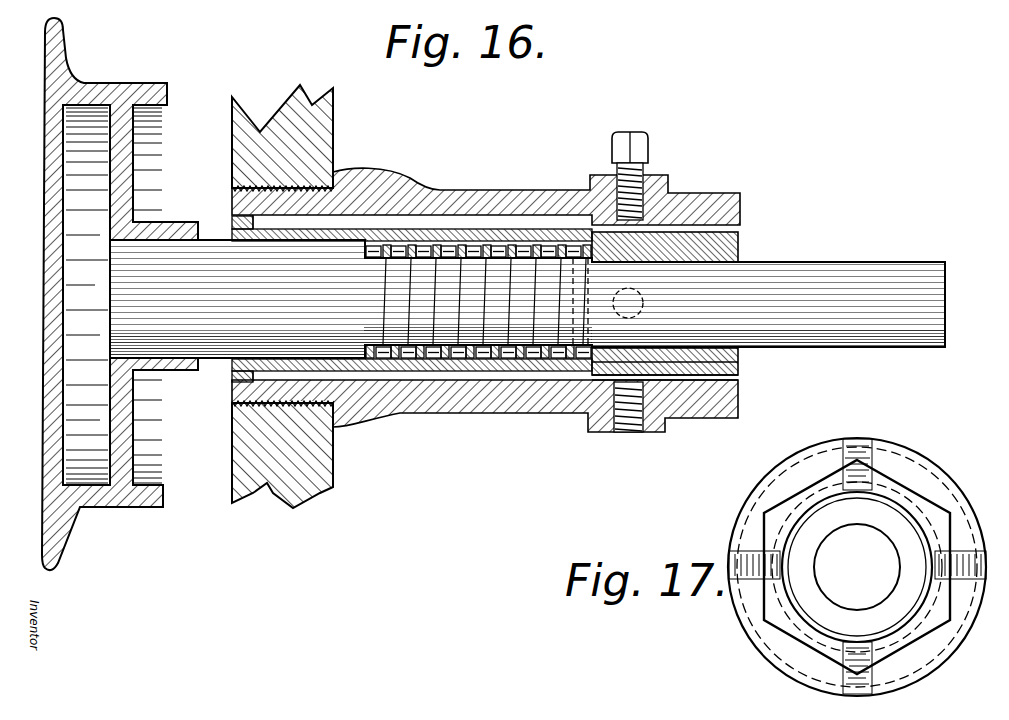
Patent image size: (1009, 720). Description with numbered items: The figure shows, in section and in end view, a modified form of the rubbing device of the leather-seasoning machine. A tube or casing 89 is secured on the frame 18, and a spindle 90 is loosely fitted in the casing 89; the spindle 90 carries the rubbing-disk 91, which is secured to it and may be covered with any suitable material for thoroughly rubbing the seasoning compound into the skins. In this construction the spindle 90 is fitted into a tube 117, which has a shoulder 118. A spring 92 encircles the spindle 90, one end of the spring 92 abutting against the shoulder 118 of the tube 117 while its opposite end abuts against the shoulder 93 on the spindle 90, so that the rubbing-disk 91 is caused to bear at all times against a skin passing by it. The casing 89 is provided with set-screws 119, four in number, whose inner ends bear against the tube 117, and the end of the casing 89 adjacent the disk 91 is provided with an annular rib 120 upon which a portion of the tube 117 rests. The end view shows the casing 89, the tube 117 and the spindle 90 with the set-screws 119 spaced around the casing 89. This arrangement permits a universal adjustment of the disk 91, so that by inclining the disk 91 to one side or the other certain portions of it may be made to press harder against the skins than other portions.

In FIG. 16, the frame 18 is at (278, 125).
In FIG. 16, the casing 89 is at (486, 193).
In FIG. 17, the casing 89 is at (922, 482).
In FIG. 16, the spindle 90 is at (527, 298).
In FIG. 17, the spindle 90 is at (857, 567).
In FIG. 16, the rubbing-disk 91 is at (102, 294).
In FIG. 16, the spring 92 is at (536, 240).
In FIG. 16, the shoulder 93 is at (372, 247).
In FIG. 16, the tube 117 is at (714, 250).
In FIG. 17, the tube 117 is at (820, 523).
In FIG. 16, the shoulder 118 is at (737, 366).
In FIG. 16, the set-screws 119 is at (643, 165).
In FIG. 16, the annular rib 120 is at (237, 228).